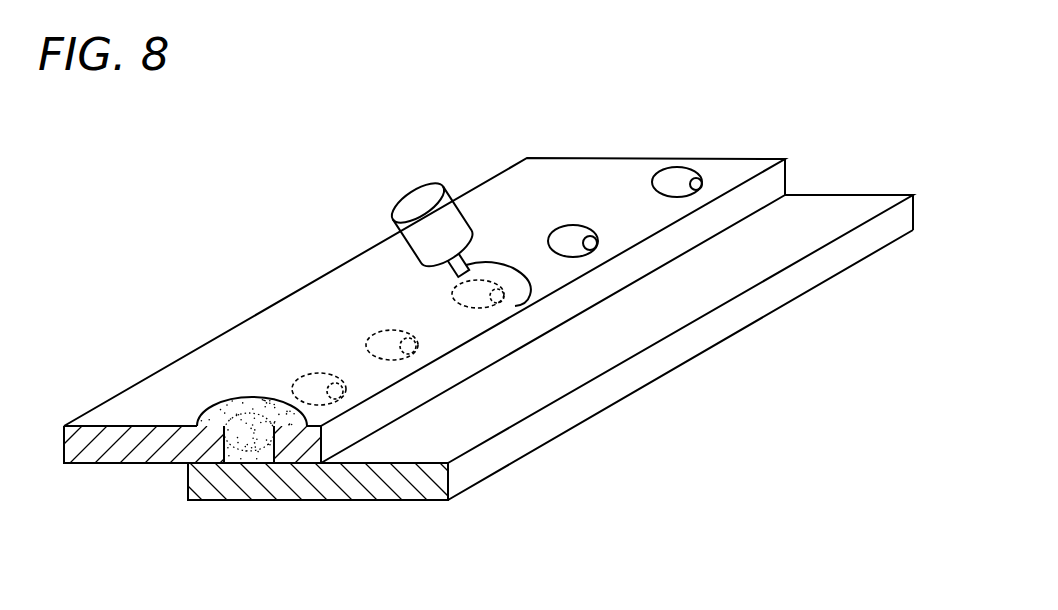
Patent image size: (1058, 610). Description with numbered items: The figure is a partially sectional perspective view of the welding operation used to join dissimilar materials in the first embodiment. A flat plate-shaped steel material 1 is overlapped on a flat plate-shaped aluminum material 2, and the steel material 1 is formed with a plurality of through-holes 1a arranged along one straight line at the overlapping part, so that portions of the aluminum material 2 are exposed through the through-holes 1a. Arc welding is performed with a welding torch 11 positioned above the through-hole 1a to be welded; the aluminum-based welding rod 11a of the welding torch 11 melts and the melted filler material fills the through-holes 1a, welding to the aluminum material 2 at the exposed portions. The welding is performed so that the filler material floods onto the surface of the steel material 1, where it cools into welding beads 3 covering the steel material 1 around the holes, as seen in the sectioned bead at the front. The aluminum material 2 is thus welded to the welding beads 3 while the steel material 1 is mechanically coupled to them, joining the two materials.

The steel material 1 is at (592, 157).
The through-holes 1a is at (700, 185).
The aluminum material 2 is at (840, 195).
The welding bead 3 is at (223, 402).
The welding torch 11 is at (406, 188).
The welding rod 11a is at (466, 262).